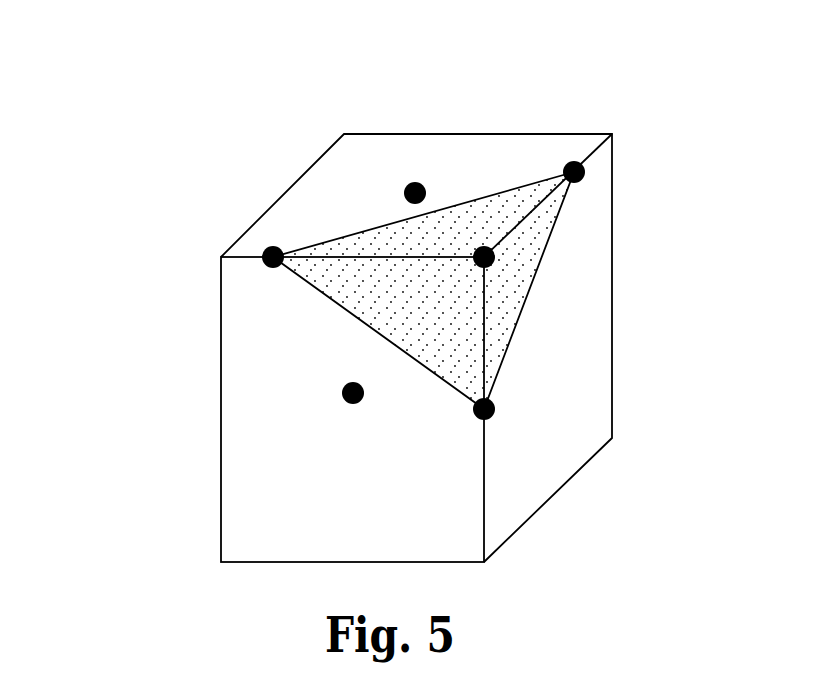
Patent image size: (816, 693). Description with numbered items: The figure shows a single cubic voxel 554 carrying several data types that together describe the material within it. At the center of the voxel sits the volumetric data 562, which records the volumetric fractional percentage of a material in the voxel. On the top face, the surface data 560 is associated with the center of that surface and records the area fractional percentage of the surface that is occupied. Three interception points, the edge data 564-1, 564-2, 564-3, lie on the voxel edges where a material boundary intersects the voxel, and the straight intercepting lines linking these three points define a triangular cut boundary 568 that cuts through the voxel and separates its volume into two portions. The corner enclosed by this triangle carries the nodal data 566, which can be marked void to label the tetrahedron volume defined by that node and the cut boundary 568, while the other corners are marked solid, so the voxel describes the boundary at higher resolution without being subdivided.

The voxel 554 is at (228, 152).
The surface data 560 is at (412, 182).
The volumetric data 562 is at (344, 401).
The edge data 564-1 is at (263, 263).
The edge data 564-2 is at (494, 415).
The edge data 564-3 is at (584, 176).
The nodal data 566 is at (494, 262).
The cut boundary 568 is at (430, 330).